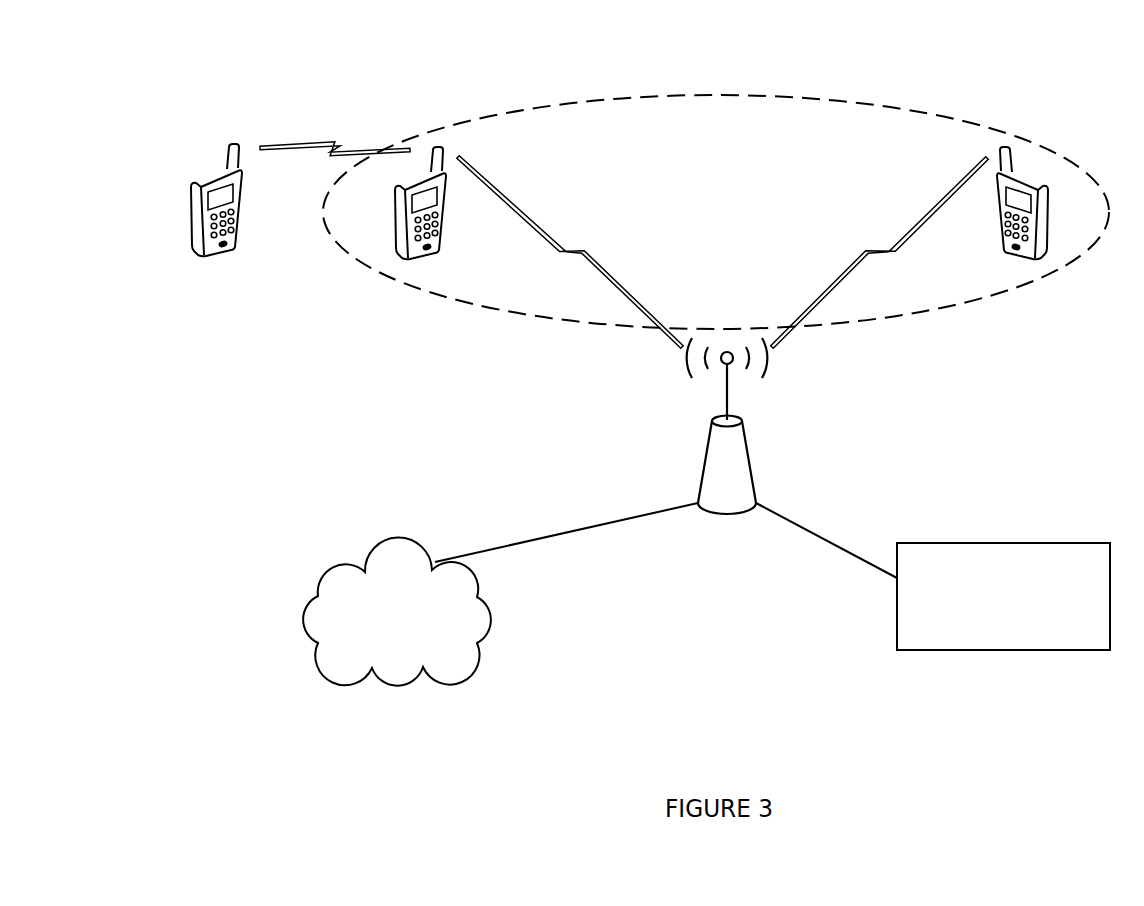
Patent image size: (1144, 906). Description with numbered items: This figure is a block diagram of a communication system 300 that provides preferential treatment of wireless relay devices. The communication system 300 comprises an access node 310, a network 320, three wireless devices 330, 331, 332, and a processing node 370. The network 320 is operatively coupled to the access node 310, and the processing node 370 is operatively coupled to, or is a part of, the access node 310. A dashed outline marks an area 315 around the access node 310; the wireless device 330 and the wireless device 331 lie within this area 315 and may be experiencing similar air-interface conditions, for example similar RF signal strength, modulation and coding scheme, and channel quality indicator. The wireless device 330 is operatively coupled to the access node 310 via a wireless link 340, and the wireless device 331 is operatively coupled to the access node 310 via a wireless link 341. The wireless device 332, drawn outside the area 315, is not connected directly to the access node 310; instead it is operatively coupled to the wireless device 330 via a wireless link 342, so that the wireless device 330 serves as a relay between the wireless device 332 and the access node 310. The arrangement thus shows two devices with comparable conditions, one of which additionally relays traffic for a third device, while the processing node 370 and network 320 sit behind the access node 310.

The communication system 300 is at (183, 32).
The access node 310 is at (730, 513).
The area 315 is at (912, 312).
The network 320 is at (417, 641).
The wireless device 330 is at (405, 260).
The wireless device 331 is at (1042, 260).
The wireless device 332 is at (217, 255).
The wireless link 340 is at (565, 253).
The wireless link 341 is at (890, 253).
The wireless link 342 is at (333, 137).
The processing node 370 is at (1023, 637).